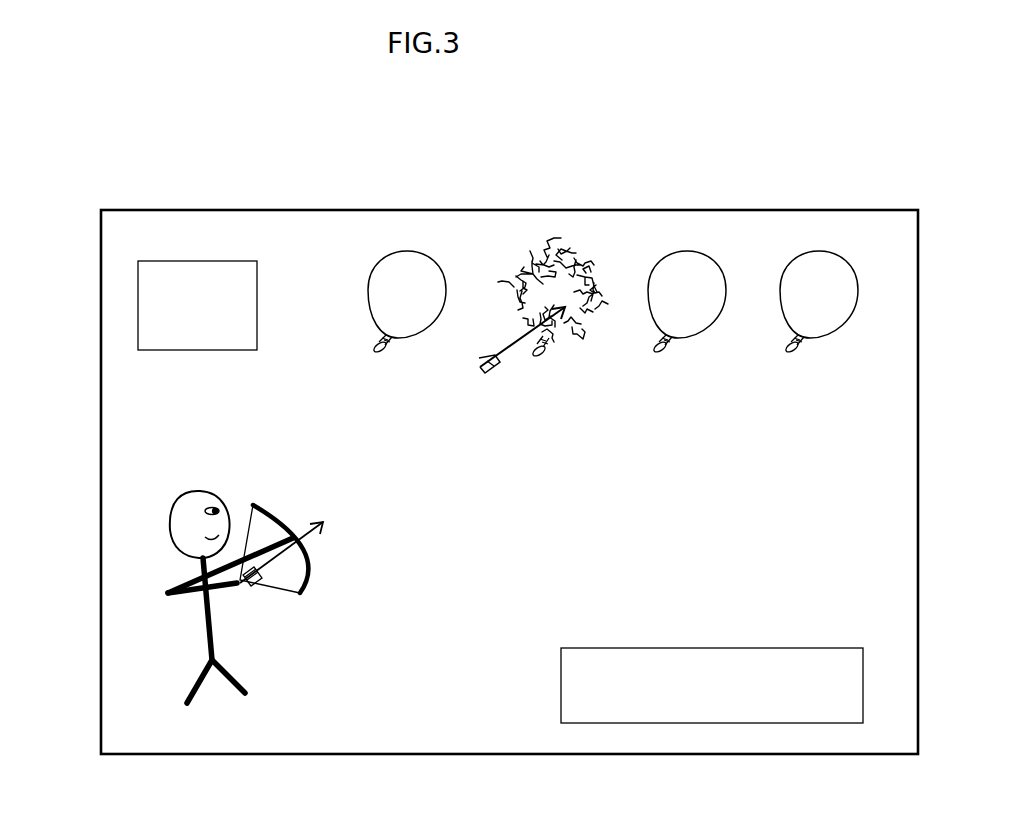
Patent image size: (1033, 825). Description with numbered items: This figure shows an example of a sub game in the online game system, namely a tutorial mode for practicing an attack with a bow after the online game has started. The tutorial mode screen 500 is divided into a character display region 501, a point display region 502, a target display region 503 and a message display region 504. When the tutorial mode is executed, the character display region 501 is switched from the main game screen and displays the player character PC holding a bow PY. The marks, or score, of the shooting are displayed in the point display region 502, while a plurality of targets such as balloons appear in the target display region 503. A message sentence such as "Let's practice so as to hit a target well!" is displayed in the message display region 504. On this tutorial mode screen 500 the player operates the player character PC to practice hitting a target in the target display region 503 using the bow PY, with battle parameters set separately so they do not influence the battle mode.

The tutorial mode screen 500 is at (367, 210).
The character display region 501 is at (124, 645).
The point display region 502 is at (159, 221).
The target display region 503 is at (867, 224).
The message display region 504 is at (718, 648).
The player character PC is at (195, 490).
The bow PY is at (296, 503).